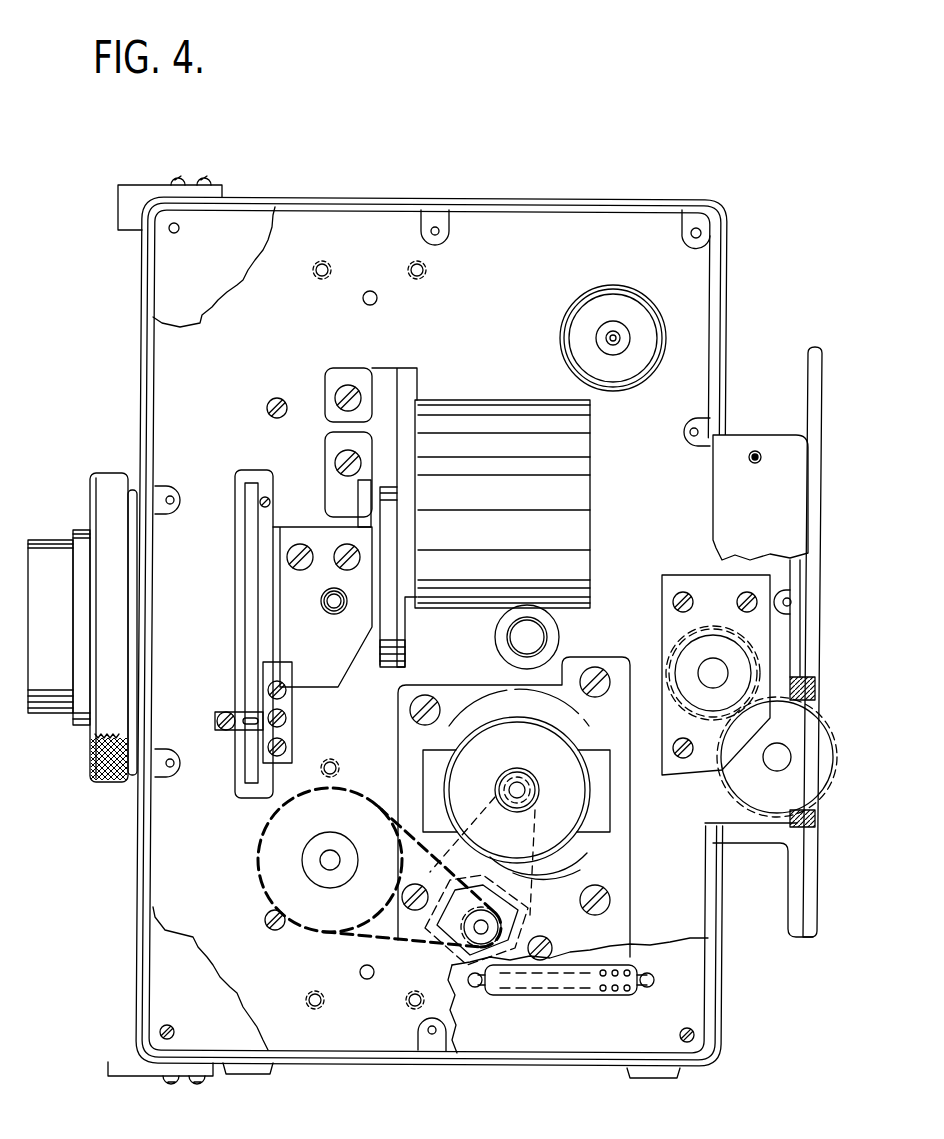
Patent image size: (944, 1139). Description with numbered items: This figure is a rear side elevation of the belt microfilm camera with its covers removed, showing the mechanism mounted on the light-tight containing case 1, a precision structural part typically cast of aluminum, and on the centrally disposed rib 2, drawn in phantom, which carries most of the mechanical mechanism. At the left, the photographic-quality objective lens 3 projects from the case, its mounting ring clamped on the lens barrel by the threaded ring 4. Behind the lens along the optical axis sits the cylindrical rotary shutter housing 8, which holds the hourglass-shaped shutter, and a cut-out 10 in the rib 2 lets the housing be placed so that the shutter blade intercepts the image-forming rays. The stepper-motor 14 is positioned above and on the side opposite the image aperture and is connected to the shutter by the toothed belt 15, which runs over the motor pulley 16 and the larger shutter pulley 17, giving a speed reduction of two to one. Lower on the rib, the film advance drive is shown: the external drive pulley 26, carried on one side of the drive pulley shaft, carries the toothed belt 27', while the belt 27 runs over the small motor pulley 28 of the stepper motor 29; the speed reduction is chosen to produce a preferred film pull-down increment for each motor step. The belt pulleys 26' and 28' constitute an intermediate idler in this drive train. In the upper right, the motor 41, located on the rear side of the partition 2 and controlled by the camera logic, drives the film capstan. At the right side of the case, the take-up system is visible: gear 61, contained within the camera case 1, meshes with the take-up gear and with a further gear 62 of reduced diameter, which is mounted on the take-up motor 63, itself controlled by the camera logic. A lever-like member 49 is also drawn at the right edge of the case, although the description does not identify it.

The containing case 1 is at (620, 199).
The rib 2 is at (429, 630).
The objective lens 3 is at (48, 715).
The threaded ring 4 is at (113, 781).
The shutter housing 8 is at (252, 484).
The cut-out 10 is at (252, 800).
The stepper-motor 14 is at (527, 500).
The toothed belt 15 is at (387, 576).
The motor pulley 16 is at (374, 491).
The shutter pulley 17 is at (403, 658).
The external drive pulley 26 is at (330, 860).
The belt pulley 26' is at (476, 898).
The belt 27 is at (498, 856).
The toothed belt 27' is at (412, 890).
The motor pulley 28 is at (534, 790).
The belt pulley 28' is at (466, 927).
The stepper motor 29 is at (585, 756).
The motor 41 is at (663, 350).
The lever 49 is at (822, 377).
The gear 61 is at (777, 757).
The gear 62 is at (745, 650).
The take-up motor 63 is at (716, 675).